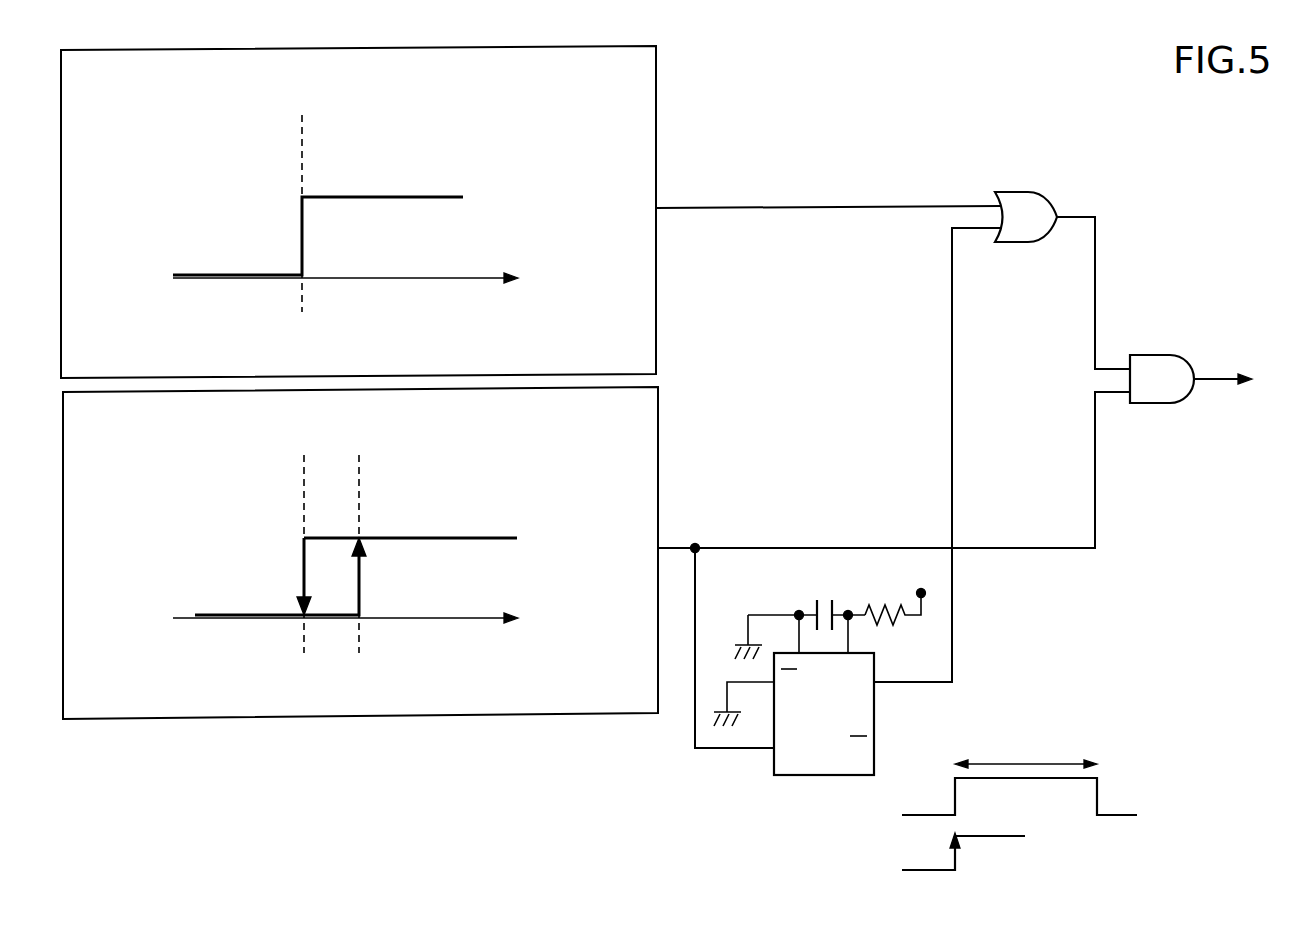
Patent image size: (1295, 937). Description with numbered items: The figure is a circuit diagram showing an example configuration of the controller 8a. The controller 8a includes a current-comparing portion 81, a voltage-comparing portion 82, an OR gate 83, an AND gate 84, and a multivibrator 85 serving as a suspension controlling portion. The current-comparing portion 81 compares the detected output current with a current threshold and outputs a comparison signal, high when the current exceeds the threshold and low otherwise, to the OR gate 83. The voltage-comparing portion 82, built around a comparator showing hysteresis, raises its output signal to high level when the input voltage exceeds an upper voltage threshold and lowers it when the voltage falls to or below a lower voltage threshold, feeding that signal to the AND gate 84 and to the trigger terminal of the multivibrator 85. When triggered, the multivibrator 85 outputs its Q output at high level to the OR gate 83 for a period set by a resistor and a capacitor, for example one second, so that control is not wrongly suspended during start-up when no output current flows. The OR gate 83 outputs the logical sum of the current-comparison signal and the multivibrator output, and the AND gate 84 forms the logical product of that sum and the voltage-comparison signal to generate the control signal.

The controller 8a is at (932, 82).
The current-comparing portion 81 is at (656, 63).
The voltage-comparing portion 82 is at (476, 716).
The OR gate 83 is at (1021, 190).
The AND gate 84 is at (1155, 354).
The multivibrator 85 is at (800, 776).